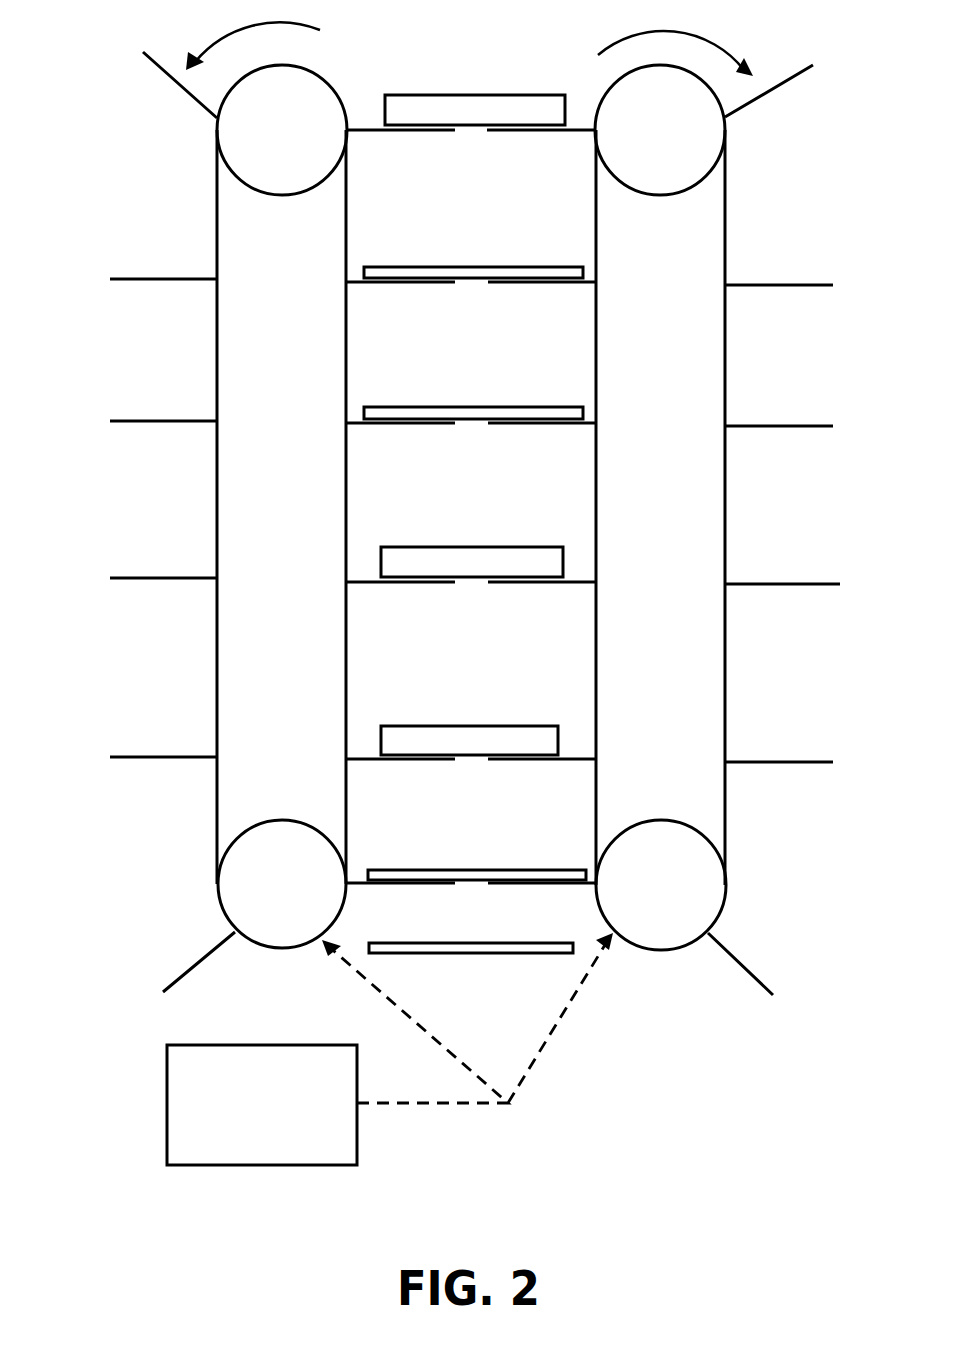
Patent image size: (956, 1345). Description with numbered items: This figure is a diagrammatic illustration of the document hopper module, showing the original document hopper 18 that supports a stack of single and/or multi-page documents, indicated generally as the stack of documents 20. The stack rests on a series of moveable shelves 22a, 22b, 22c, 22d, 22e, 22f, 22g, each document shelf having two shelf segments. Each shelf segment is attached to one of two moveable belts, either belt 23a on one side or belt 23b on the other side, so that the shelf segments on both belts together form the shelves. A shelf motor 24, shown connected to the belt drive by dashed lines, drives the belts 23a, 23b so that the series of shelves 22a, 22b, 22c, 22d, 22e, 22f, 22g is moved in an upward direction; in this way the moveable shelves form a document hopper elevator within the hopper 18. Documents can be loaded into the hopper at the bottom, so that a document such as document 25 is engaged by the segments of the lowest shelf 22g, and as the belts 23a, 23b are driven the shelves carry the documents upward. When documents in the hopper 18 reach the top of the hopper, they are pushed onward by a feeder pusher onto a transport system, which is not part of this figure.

The original document hopper 18 is at (103, 476).
The stack of documents 20 is at (380, 338).
The moveable shelf 22a is at (558, 887).
The moveable shelf 22b is at (570, 760).
The moveable shelf 22c is at (539, 583).
The moveable shelf 22d is at (540, 425).
The moveable shelf 22e is at (553, 283).
The moveable shelf 22f is at (547, 132).
The moveable shelf 22g is at (192, 963).
The belt 23a is at (217, 678).
The belt 23b is at (725, 695).
The shelf motor 24 is at (163, 1095).
The document 25 is at (437, 957).